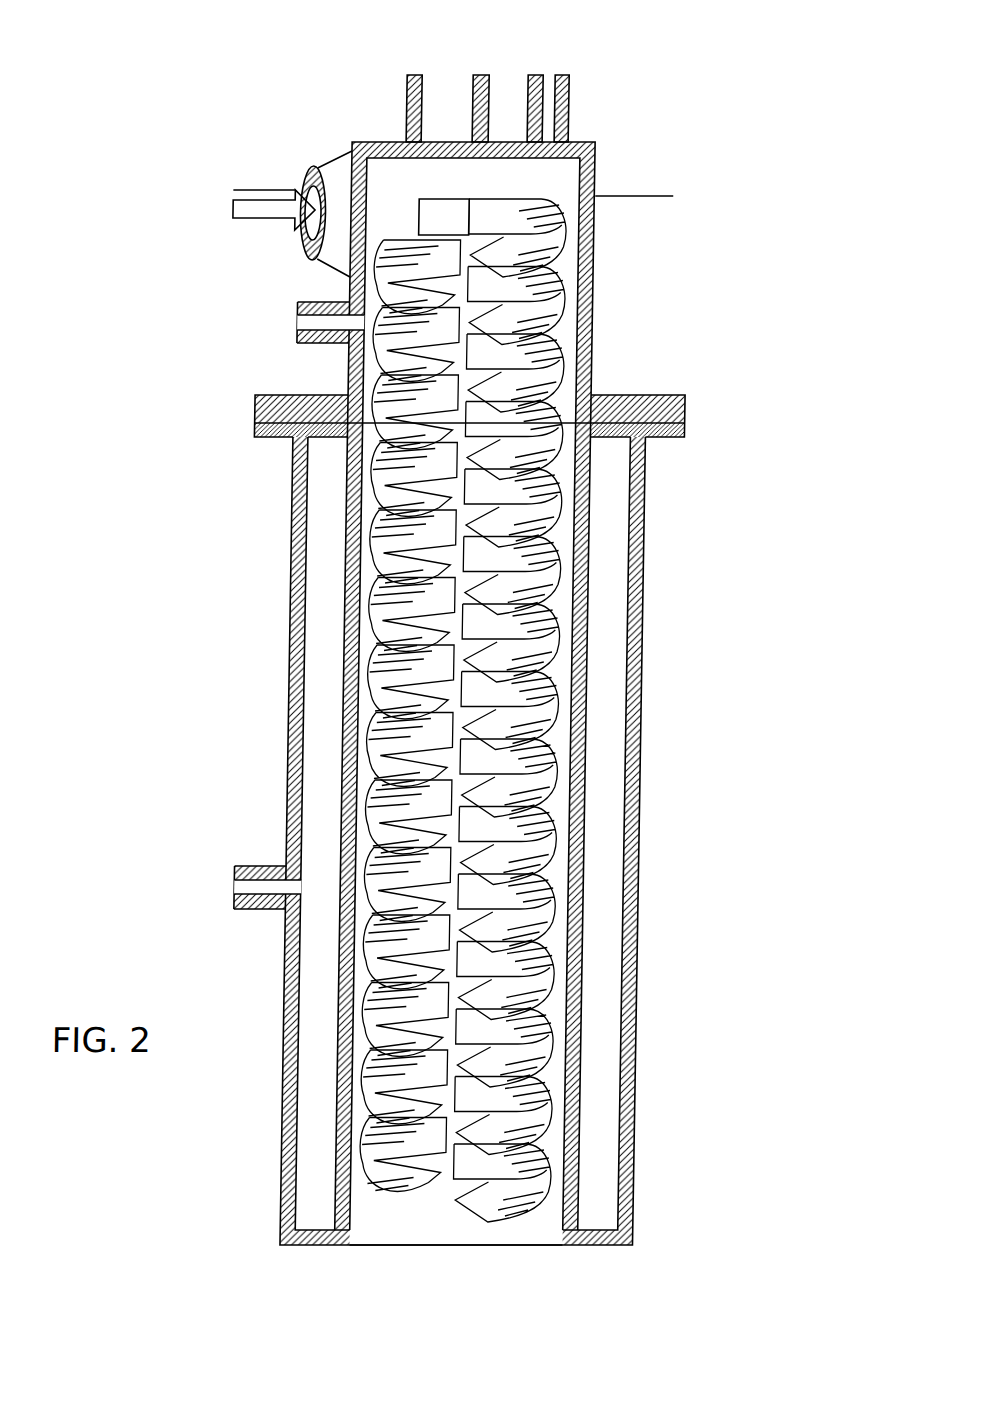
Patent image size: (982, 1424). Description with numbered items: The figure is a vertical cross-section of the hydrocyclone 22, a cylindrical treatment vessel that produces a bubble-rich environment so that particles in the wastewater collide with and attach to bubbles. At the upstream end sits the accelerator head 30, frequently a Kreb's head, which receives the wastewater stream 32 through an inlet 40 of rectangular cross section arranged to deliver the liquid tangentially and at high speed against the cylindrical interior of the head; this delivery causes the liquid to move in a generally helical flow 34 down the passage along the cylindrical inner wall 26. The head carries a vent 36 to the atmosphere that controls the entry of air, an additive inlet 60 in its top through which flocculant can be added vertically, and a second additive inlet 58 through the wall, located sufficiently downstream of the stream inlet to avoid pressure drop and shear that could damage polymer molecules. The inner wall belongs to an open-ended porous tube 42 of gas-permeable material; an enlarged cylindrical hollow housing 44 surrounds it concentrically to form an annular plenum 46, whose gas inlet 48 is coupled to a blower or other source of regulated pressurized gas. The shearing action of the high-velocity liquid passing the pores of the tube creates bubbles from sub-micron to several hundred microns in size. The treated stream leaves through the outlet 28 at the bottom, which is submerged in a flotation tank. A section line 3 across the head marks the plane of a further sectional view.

The section line of FIG. 3 is at (452, 181).
The hydrocyclone 22 is at (469, 646).
The cylindrical inner wall 26 is at (439, 631).
The outlet 28 is at (547, 1246).
The accelerator head 30 is at (599, 283).
The wastewater stream 32 is at (235, 218).
The helical flow 34 is at (457, 631).
The vent 36 is at (427, 73).
The inlet 40 is at (439, 223).
The porous tube 42 is at (350, 692).
The cylindrical hollow housing 44 is at (298, 506).
The annular plenum 46 is at (423, 841).
The gas inlet 48 is at (251, 878).
The additive inlet 58 is at (308, 323).
The additive inlet 60 is at (552, 74).